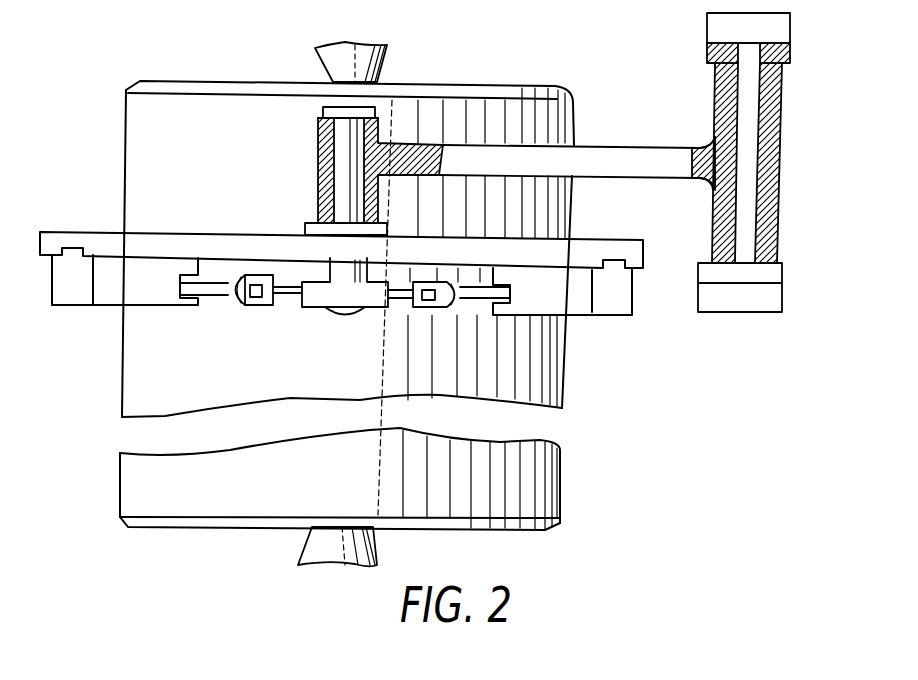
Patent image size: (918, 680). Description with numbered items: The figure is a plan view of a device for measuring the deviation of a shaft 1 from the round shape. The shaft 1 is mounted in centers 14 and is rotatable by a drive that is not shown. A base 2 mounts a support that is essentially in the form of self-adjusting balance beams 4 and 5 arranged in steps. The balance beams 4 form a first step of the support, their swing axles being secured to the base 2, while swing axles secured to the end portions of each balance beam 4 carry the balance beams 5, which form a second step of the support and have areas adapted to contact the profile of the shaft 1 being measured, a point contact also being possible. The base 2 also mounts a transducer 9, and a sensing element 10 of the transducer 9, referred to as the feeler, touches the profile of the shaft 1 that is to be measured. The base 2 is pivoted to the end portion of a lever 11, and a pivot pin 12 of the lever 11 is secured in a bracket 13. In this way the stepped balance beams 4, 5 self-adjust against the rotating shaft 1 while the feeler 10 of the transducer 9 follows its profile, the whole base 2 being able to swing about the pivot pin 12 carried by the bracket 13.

The shaft 1 is at (492, 110).
The base 2 is at (590, 252).
The balance beam 4 is at (212, 296).
The balance beam 5 is at (286, 298).
The transducer 9 is at (370, 300).
The sensing element 10 is at (757, 30).
The lever 11 is at (628, 162).
The pivot pin 12 is at (750, 167).
The bracket 13 is at (713, 297).
The centers 14 is at (376, 62).